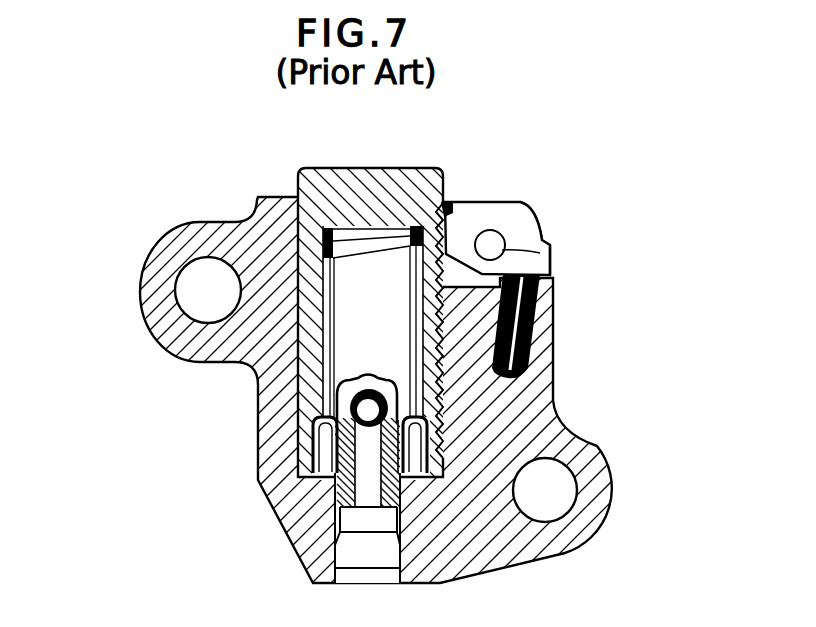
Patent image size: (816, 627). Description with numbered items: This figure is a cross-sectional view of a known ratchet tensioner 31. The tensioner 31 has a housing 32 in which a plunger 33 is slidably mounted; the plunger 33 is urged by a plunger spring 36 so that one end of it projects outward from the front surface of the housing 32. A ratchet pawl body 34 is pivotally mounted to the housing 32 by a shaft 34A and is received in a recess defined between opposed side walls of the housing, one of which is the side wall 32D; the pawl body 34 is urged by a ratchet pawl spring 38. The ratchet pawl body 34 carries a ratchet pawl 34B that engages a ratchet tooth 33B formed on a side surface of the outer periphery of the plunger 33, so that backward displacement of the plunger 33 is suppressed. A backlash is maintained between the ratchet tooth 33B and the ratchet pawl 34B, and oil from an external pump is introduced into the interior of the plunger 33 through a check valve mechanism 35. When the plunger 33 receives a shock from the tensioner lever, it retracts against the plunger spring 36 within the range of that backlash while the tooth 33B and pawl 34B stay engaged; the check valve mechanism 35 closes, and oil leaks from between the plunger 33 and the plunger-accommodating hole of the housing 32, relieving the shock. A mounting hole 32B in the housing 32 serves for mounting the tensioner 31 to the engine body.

The ratchet tensioner 31 is at (227, 171).
The housing 32 is at (598, 453).
The mounting hole 32B is at (567, 490).
The side wall 32D is at (541, 212).
The plunger 33 is at (357, 176).
The ratchet tooth 33B is at (445, 398).
The ratchet pawl body 34 is at (482, 204).
The shaft 34A is at (551, 262).
The ratchet pawl 34B is at (448, 200).
The check valve mechanism 35 is at (370, 361).
The plunger spring 36 is at (350, 360).
The ratchet pawl spring 38 is at (548, 287).